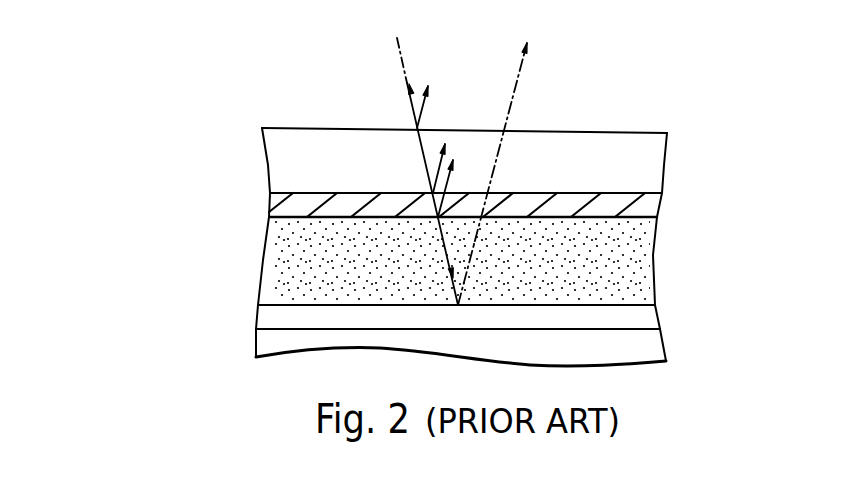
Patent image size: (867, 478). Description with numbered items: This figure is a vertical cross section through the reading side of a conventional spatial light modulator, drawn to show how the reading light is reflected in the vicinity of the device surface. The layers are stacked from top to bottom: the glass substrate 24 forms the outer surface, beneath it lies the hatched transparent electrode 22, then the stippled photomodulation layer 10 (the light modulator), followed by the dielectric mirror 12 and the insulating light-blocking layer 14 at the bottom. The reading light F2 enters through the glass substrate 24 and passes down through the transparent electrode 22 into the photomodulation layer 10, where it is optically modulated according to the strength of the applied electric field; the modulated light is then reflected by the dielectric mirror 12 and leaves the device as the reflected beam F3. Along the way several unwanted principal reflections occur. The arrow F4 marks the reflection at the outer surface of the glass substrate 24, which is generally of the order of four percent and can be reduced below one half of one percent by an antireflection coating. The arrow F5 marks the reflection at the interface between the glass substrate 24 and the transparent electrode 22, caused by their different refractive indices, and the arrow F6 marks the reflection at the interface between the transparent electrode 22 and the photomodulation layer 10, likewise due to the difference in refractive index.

The glass substrate 24 is at (655, 160).
The transparent electrode 22 is at (650, 208).
The photomodulation layer 10 is at (643, 255).
The dielectric mirror 12 is at (648, 319).
The insulating light-blocking layer 14 is at (657, 351).
The reading light F2 is at (411, 112).
The reflected reading light F3 is at (520, 77).
The surface reflection F4 is at (432, 103).
The substrate-electrode interface reflection F5 is at (440, 150).
The electrode-modulator interface reflection F6 is at (455, 192).